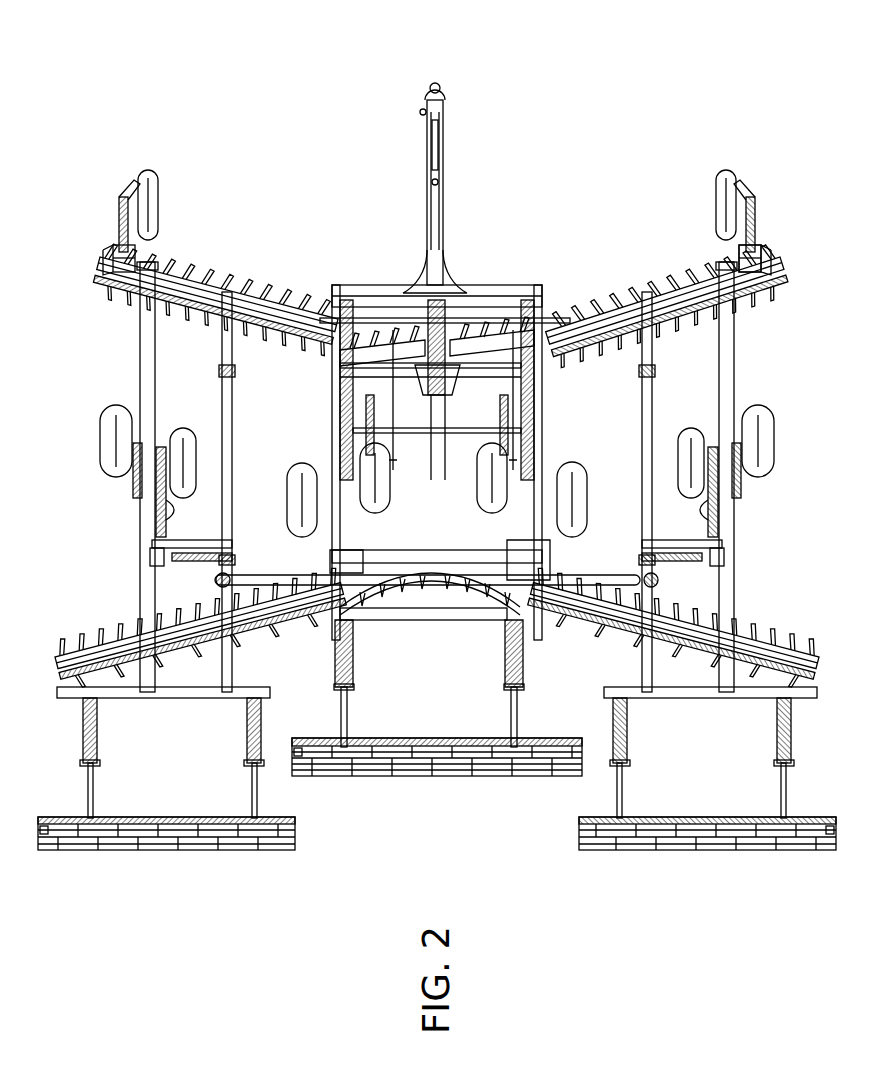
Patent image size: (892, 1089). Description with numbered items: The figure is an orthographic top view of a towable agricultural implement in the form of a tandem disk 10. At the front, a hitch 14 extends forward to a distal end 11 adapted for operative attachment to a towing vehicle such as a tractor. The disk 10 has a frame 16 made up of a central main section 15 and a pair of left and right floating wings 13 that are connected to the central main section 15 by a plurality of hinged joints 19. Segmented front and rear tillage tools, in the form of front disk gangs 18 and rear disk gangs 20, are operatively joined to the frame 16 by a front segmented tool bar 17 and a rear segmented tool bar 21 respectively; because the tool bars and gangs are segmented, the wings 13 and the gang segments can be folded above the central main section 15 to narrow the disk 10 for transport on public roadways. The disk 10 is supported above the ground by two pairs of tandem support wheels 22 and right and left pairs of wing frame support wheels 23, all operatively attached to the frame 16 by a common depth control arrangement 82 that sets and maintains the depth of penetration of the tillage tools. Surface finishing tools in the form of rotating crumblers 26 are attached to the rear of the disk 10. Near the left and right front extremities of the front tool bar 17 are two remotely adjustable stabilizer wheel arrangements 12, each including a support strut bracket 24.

The tandem disk 10 is at (63, 522).
The distal end 11 is at (430, 84).
The stabilizer wheel arrangement 12 is at (125, 164).
The floating wing 13 is at (133, 324).
The hitch 14 is at (427, 205).
The central main section 15 is at (330, 440).
The frame 16 is at (142, 357).
The front segmented tool bar 17 is at (313, 320).
The front disk gang 18 is at (765, 262).
The hinged joint 19 is at (252, 300).
The rear disk gang 20 is at (800, 642).
The rear segmented tool bar 21 is at (738, 633).
The tandem support wheel 22 is at (288, 490).
The wing frame support wheel 23 is at (114, 442).
The support strut bracket 24 is at (118, 243).
The rotating crumbler 26 is at (434, 793).
The depth control arrangement 82 is at (163, 530).